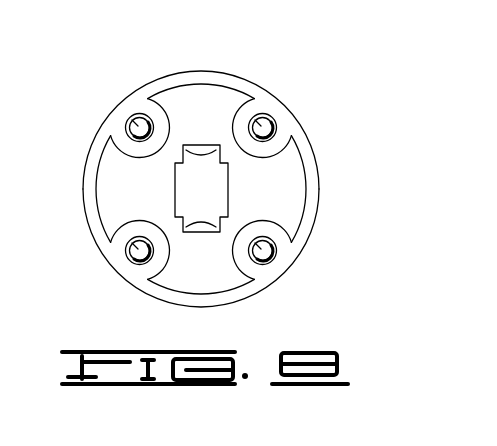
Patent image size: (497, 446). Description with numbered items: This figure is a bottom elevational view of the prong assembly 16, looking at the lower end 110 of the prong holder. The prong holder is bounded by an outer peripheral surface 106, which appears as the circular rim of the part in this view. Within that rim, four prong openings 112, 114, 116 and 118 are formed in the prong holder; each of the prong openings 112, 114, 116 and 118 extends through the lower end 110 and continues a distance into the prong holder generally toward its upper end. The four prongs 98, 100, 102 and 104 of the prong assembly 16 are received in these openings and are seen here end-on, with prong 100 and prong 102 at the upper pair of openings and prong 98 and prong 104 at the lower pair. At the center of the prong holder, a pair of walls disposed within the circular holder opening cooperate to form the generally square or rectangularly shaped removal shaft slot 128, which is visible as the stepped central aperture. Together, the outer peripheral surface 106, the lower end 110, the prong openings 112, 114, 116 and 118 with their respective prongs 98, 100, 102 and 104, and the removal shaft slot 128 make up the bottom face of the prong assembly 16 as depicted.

The prong assembly 16 is at (215, 67).
The prong 98 is at (134, 257).
The prong 100 is at (133, 123).
The prong 102 is at (270, 124).
The prong 104 is at (271, 257).
The outer peripheral surface 106 is at (247, 316).
The lower end 110 is at (84, 184).
The prong opening 112 is at (133, 250).
The prong opening 114 is at (135, 119).
The prong opening 116 is at (266, 118).
The prong opening 118 is at (272, 250).
The removal shaft slot 128 is at (208, 196).